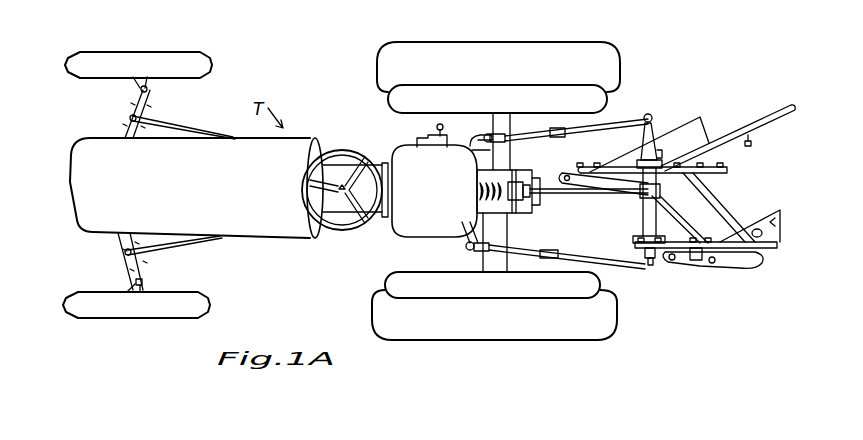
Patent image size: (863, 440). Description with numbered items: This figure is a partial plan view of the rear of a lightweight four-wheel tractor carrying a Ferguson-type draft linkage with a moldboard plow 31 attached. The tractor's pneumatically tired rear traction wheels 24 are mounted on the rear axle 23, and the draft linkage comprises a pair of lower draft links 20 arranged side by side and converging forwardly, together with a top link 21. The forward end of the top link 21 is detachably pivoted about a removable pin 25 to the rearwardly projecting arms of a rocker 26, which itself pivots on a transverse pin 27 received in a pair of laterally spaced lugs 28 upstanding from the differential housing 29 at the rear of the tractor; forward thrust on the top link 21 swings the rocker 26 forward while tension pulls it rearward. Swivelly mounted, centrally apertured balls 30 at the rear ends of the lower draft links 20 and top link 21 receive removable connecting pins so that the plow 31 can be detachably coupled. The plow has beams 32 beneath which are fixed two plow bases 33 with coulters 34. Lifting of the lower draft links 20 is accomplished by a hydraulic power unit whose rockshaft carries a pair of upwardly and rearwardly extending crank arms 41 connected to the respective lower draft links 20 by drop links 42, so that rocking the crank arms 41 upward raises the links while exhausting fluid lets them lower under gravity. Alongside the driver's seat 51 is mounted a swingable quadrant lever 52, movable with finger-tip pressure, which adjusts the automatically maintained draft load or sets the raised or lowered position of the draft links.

The lower draft links 20 is at (618, 126).
The top link 21 is at (568, 196).
The rear axle 23 is at (487, 263).
The rear traction wheels 24 is at (505, 43).
The removable pin 25 is at (528, 204).
The rocker 26 is at (520, 172).
The transverse pin 27 is at (516, 216).
The lugs 28 is at (478, 192).
The differential housing 29 is at (540, 171).
The swivelly mounted balls 30 is at (656, 120).
The moldboard plow 31 is at (798, 150).
The beams 32 is at (778, 246).
The plow bases 33 is at (698, 130).
The coulters 34 is at (709, 262).
The crank arms 41 is at (466, 145).
The drop links 42 is at (500, 137).
The driver's seat 51 is at (402, 152).
The quadrant lever 52 is at (437, 126).